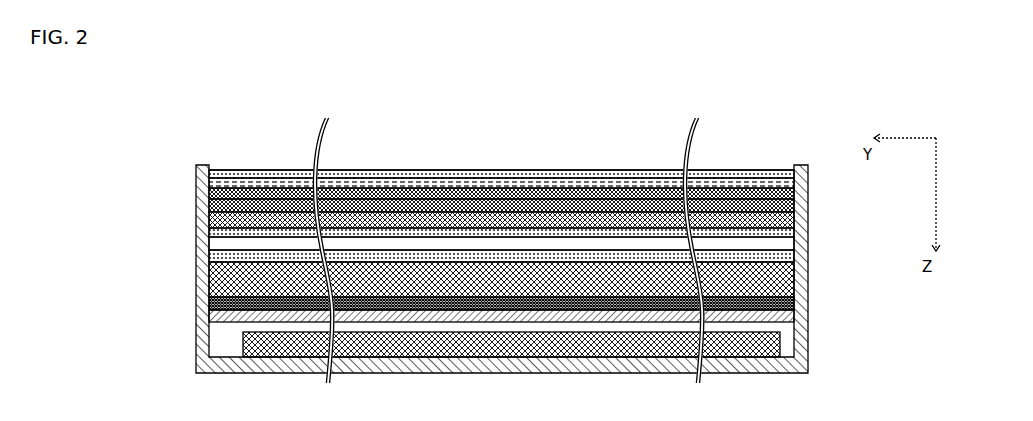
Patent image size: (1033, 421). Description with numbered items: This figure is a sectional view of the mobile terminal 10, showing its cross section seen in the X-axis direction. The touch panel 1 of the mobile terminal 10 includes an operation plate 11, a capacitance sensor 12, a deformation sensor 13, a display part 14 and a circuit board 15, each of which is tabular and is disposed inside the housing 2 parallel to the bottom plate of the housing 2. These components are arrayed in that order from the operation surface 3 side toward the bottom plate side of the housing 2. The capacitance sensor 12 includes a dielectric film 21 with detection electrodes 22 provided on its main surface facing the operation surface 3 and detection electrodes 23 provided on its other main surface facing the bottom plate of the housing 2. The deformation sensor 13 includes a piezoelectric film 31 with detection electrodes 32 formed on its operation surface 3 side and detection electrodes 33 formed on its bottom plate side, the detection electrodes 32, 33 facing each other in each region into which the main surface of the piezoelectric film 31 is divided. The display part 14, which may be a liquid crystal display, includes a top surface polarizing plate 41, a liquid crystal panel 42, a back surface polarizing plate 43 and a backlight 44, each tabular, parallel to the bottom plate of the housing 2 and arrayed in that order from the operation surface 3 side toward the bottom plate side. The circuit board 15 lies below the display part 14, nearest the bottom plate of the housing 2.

The touch panel 1 is at (491, 220).
The housing 2 is at (808, 364).
The operation surface 3 is at (441, 194).
The mobile terminal 10 is at (491, 238).
The operation plate 11 is at (808, 176).
The capacitance sensor 12 is at (441, 171).
The deformation sensor 13 is at (441, 237).
The display part 14 is at (552, 287).
The circuit board 15 is at (737, 350).
The dielectric film 21 is at (212, 182).
The detection electrodes 22 is at (226, 184).
The detection electrodes 23 is at (212, 194).
The piezoelectric film 31 is at (212, 226).
The detection electrodes 32 is at (212, 211).
The detection electrodes 33 is at (212, 240).
The top surface polarizing plate 41 is at (808, 253).
The liquid crystal panel 42 is at (796, 284).
The back surface polarizing plate 43 is at (794, 303).
The backlight 44 is at (528, 322).